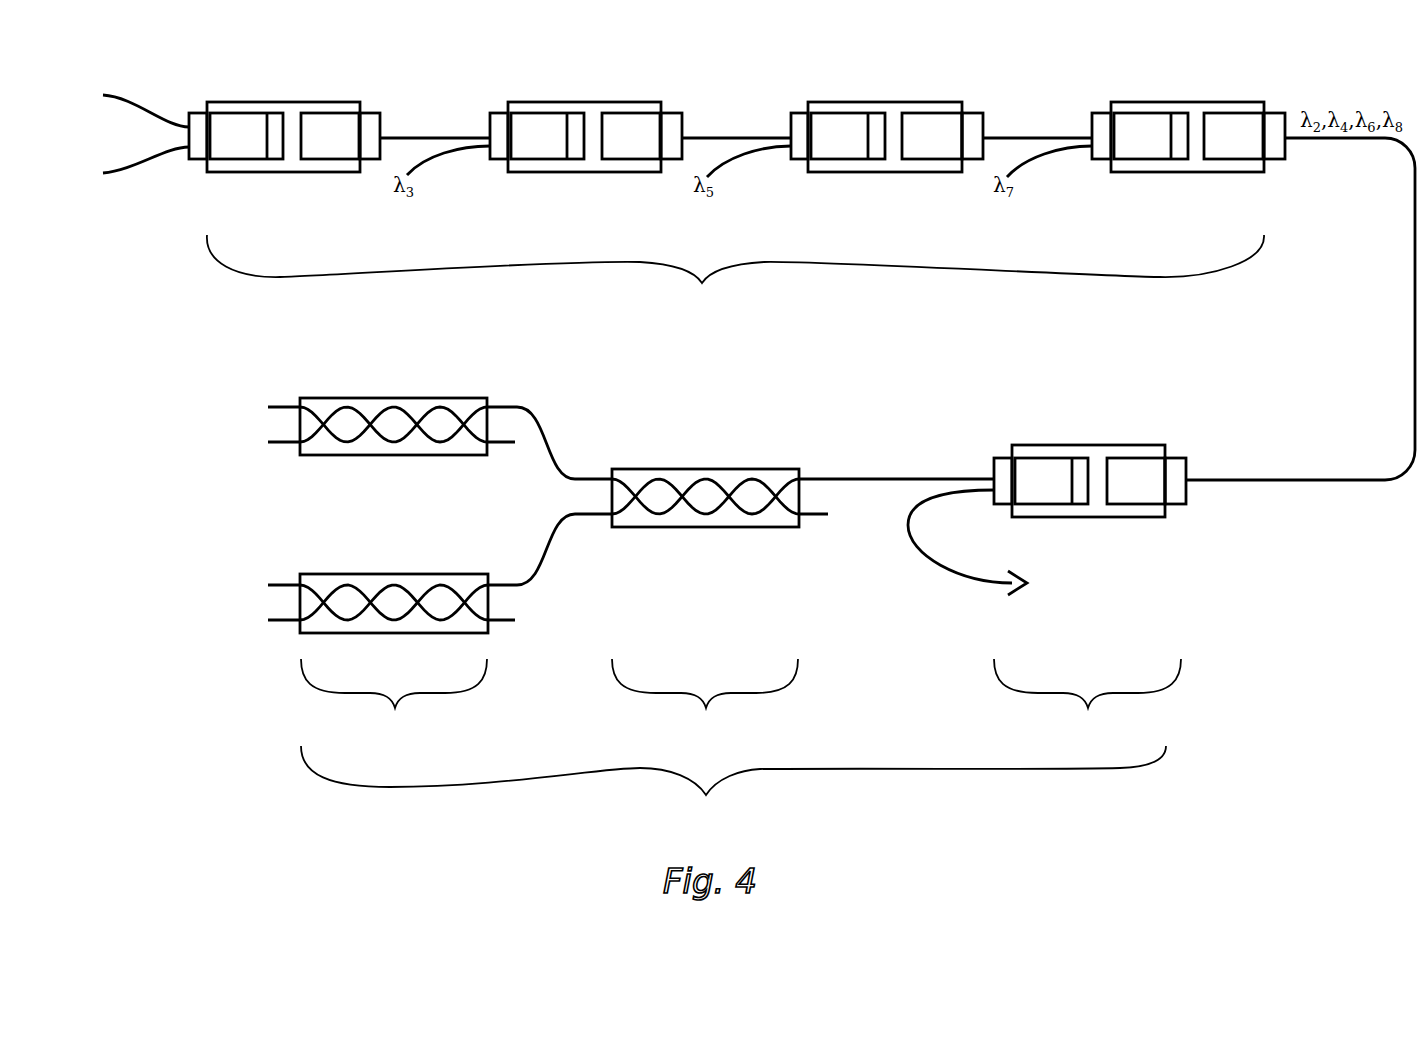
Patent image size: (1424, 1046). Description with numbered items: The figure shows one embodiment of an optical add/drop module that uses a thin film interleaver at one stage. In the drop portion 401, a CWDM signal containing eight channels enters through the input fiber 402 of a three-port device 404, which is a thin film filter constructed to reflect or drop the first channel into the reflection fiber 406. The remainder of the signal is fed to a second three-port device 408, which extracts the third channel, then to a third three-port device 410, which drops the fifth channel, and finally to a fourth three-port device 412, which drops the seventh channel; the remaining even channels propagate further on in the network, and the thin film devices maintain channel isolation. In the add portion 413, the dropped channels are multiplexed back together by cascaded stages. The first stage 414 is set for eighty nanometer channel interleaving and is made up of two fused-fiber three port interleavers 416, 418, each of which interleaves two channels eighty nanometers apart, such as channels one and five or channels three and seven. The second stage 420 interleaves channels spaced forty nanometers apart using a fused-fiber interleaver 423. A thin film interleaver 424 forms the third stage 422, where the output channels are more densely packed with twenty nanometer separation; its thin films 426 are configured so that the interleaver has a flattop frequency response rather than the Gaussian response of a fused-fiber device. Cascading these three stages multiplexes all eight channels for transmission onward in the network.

The drop portion 401 is at (735, 276).
The input fiber 402 is at (165, 125).
The three-port device 404 is at (277, 102).
The reflection fiber 406 is at (163, 149).
The second three-port device 408 is at (577, 102).
The third three-port device 410 is at (877, 102).
The fourth three-port device 412 is at (1178, 102).
The add portion 413 is at (733, 787).
The first stage 414 is at (394, 701).
The three port interleaver 416 is at (373, 398).
The three port interleaver 418 is at (375, 574).
The second stage 420 is at (705, 701).
The third stage 422 is at (1087, 701).
The fused-fiber interleaver 423 is at (705, 527).
The thin film interleaver 424 is at (1080, 445).
The thin film 426 is at (1045, 493).